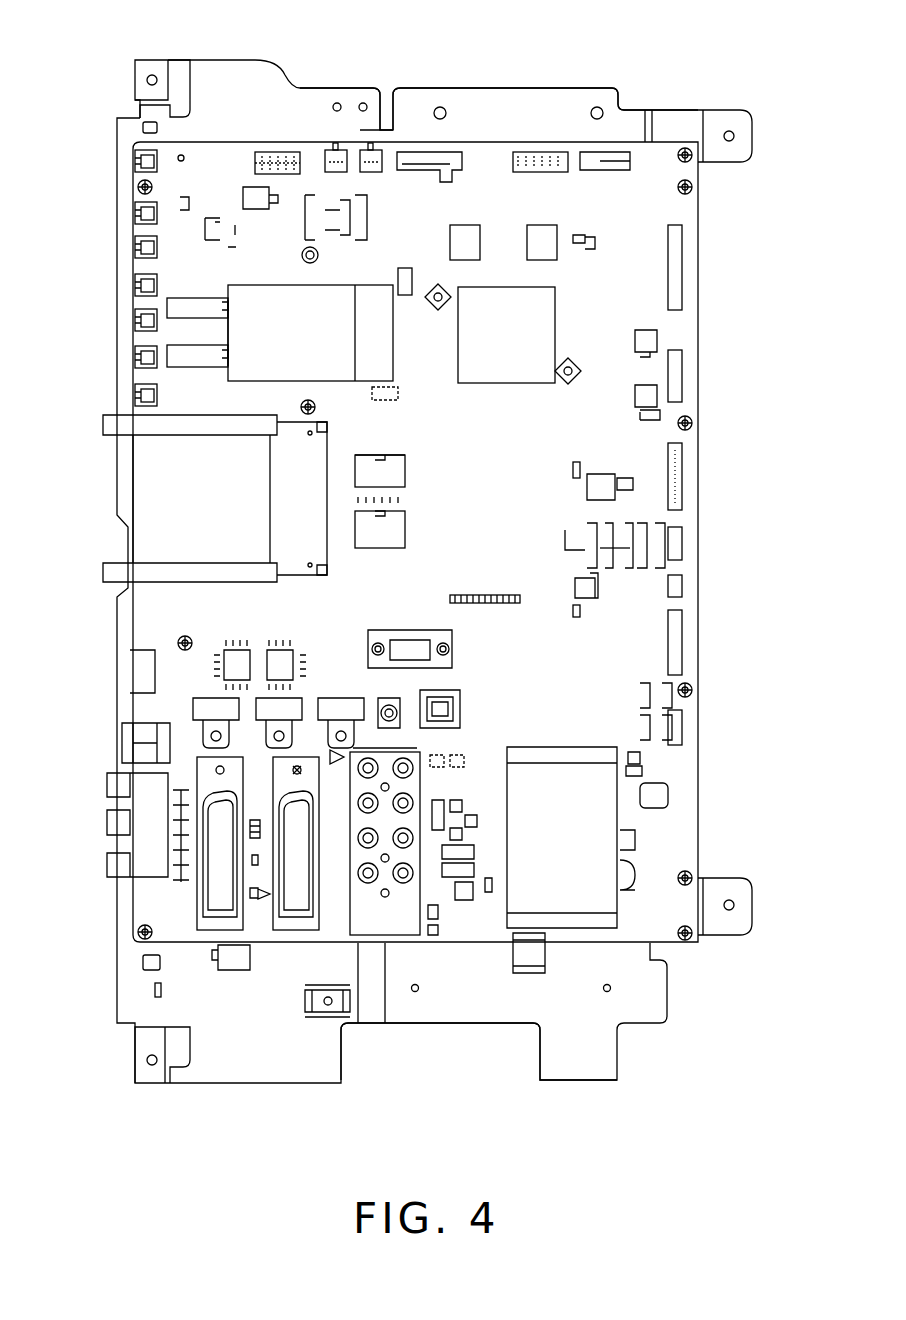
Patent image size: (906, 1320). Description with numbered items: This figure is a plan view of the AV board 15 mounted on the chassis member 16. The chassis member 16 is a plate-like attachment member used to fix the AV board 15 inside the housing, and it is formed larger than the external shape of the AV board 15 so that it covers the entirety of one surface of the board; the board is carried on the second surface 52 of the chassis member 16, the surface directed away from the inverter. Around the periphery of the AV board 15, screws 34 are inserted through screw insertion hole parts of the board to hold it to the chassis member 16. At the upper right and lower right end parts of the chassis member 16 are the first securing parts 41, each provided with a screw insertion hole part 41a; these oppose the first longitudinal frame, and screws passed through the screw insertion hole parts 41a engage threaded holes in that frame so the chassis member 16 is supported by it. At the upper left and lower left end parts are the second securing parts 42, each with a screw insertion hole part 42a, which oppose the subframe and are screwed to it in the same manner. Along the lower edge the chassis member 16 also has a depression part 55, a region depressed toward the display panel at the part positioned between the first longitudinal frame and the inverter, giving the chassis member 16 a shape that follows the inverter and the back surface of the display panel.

The AV board 15 is at (650, 497).
The chassis member 16 is at (507, 100).
The screws 34 is at (138, 187).
The first securing part 41 is at (738, 122).
The screw insertion hole part 41a is at (734, 136).
The second securing part 42 is at (143, 60).
The screw insertion hole part 42a is at (146, 80).
The second surface 52 is at (407, 571).
The depression part 55 is at (462, 990).